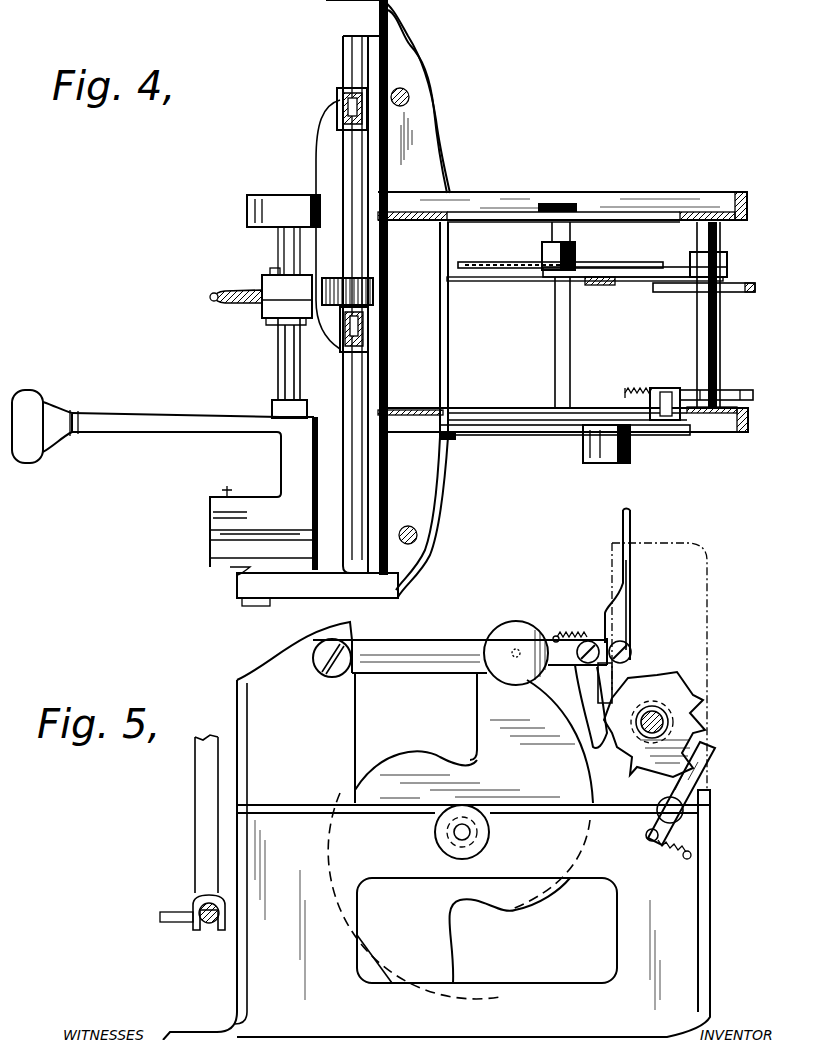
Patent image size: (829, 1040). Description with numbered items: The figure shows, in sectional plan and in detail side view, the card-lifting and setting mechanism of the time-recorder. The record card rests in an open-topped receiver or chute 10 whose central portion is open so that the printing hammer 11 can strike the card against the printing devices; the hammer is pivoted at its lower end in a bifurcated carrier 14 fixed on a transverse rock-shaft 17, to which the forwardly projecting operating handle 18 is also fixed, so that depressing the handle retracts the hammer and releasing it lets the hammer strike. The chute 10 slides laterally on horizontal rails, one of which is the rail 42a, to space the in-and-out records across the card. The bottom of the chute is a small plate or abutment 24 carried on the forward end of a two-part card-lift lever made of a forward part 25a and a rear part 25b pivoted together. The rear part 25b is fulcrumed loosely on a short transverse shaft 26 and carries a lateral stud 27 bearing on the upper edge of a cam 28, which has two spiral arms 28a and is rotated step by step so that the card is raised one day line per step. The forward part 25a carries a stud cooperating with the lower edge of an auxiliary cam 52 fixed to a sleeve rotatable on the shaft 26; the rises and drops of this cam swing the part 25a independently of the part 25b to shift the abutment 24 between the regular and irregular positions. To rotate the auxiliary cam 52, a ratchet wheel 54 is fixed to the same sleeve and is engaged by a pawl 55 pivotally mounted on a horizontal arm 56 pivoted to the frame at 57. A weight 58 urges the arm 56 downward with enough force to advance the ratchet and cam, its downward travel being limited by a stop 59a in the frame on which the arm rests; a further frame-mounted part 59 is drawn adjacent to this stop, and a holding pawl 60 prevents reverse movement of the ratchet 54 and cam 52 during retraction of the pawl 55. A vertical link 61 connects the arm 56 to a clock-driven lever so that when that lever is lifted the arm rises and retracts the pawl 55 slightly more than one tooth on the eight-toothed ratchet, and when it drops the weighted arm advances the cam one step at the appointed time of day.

In FIG. 4, the horizontal rail 42a is at (347, 60).
In FIG. 4, the receiver or chute 10 is at (343, 98).
In FIG. 4, the bifurcated carrier 14 is at (268, 277).
In FIG. 4, the printing hammer 11 is at (244, 306).
In FIG. 4, the abutment 24 is at (372, 298).
In FIG. 4, the transverse rock-shaft 17 is at (278, 373).
In FIG. 4, the operating handle 18 is at (160, 422).
In FIG. 4, the cam 28 is at (480, 262).
In FIG. 5, the cam 28 is at (459, 874).
In FIG. 4, the abutment lever part 25a is at (492, 281).
In FIG. 4, the abutment lever part 25b is at (668, 262).
In FIG. 4, the lateral stud 27 is at (578, 257).
In FIG. 4, the short transverse shaft 26 is at (720, 235).
In FIG. 5, the short transverse shaft 26 is at (672, 725).
In FIG. 4, the auxiliary cam 52 is at (745, 283).
In FIG. 4, the ratchet wheel 54 is at (743, 392).
In FIG. 5, the ratchet wheel 54 is at (693, 700).
In FIG. 4, the pawl 55 is at (642, 388).
In FIG. 5, the pawl 55 is at (588, 697).
In FIG. 4, the horizontal arm 56 is at (505, 435).
In FIG. 5, the horizontal arm 56 is at (428, 645).
In FIG. 4, the pivot 57 is at (450, 440).
In FIG. 5, the pivot 57 is at (340, 653).
In FIG. 4, the weight 58 is at (595, 463).
In FIG. 5, the weight 58 is at (522, 628).
In FIG. 5, the screw 59 is at (612, 675).
In FIG. 5, the stop 59a is at (600, 655).
In FIG. 5, the holding pawl 60 is at (693, 777).
In FIG. 5, the vertical link 61 is at (630, 528).
In FIG. 5, the spiral arm 28a is at (483, 693).